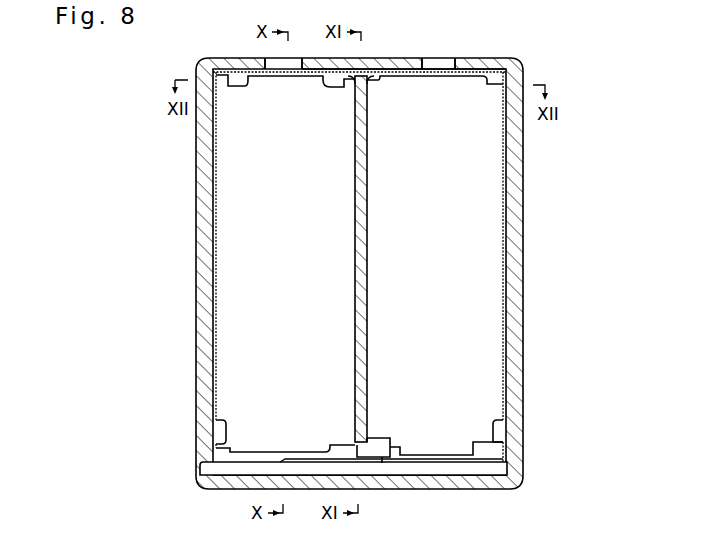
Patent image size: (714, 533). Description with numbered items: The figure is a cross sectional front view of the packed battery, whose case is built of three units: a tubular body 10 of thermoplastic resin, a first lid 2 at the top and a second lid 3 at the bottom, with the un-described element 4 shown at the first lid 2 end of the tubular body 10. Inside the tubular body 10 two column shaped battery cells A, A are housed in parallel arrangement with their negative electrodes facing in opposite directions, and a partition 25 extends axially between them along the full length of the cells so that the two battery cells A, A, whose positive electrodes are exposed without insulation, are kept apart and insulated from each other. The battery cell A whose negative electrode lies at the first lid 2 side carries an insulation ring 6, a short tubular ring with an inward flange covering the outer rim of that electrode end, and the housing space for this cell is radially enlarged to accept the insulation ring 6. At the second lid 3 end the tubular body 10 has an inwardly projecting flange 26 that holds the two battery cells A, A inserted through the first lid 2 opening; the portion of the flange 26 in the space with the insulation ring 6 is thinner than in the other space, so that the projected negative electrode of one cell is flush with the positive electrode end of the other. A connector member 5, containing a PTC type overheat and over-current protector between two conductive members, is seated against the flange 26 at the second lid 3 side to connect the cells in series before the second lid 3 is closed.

The tubular body 10 is at (523, 206).
The first lid 2 is at (466, 66).
The second lid 3 is at (458, 490).
The opening in top wall 4 is at (287, 66).
The connector member 5 is at (298, 462).
The insulation ring 6 is at (223, 82).
The partition 25 is at (355, 272).
The flange 26 is at (216, 424).
The battery cell A is at (230, 350).